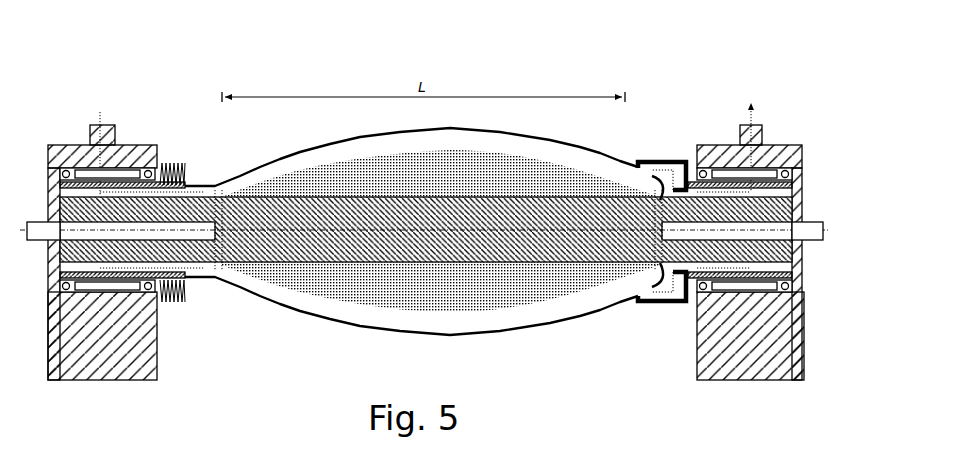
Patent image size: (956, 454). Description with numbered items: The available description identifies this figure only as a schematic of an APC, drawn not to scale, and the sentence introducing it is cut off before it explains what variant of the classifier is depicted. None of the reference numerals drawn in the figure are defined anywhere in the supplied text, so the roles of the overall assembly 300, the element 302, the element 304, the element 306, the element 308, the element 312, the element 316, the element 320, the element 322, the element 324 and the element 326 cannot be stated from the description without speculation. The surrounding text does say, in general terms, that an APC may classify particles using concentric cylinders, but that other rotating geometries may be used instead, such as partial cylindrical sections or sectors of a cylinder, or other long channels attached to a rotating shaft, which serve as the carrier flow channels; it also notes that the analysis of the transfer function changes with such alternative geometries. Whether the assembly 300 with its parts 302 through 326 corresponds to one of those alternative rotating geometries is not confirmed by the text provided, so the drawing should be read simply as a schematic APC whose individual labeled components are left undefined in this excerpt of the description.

The roller assembly 300 is at (420, 57).
The inflatable bladder 302 is at (513, 312).
The outer sleeve membrane 304 is at (541, 140).
The shaft inlet end 306 is at (22, 238).
The housing port 308 is at (100, 117).
The housing outlet port 312 is at (760, 113).
The shaft outlet end 316 is at (831, 228).
The shaft 320 is at (397, 263).
The bearing 322 is at (147, 295).
The spring 324 is at (175, 301).
The sleeve tube 326 is at (200, 186).